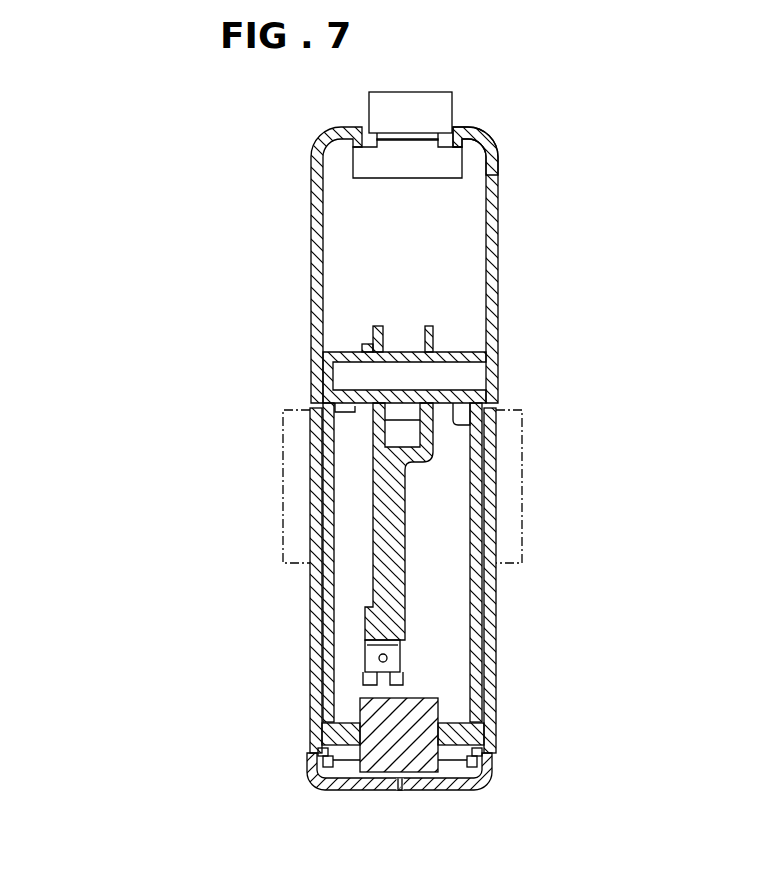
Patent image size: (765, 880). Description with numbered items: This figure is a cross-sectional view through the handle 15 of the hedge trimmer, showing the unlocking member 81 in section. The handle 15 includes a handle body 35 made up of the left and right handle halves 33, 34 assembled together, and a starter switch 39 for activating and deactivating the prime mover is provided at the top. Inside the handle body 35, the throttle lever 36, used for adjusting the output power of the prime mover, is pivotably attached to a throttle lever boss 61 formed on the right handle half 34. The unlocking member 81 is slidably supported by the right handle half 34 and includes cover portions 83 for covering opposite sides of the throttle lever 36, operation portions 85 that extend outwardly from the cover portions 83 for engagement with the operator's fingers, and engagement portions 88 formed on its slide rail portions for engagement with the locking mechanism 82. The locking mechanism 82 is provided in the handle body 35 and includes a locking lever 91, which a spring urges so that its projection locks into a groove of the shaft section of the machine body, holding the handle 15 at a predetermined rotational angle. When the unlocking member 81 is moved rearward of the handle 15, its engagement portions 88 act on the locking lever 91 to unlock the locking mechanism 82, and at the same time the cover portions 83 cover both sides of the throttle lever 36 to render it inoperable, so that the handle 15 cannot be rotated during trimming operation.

The handle 15 is at (155, 117).
The left handle half 33 is at (418, 230).
The right handle half 34 is at (522, 180).
The handle body 35 is at (525, 130).
The starter switch 39 is at (437, 107).
The throttle lever boss 61 is at (401, 365).
The unlocking member 81 is at (495, 535).
The cover portions 83 is at (317, 508).
The operation portions 85 is at (282, 460).
The throttle lever 36 is at (462, 565).
The engagement portions 88 is at (337, 733).
The locking lever 91 is at (388, 750).
The locking mechanism 82 is at (442, 762).